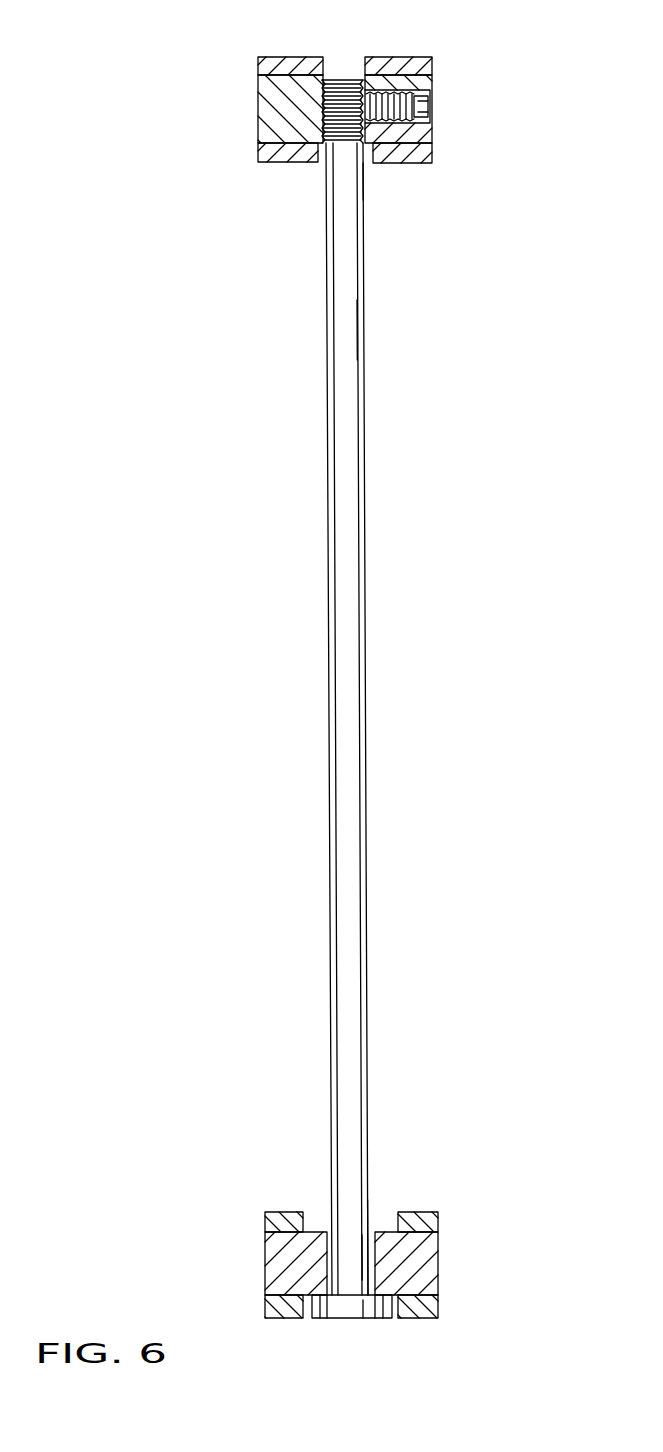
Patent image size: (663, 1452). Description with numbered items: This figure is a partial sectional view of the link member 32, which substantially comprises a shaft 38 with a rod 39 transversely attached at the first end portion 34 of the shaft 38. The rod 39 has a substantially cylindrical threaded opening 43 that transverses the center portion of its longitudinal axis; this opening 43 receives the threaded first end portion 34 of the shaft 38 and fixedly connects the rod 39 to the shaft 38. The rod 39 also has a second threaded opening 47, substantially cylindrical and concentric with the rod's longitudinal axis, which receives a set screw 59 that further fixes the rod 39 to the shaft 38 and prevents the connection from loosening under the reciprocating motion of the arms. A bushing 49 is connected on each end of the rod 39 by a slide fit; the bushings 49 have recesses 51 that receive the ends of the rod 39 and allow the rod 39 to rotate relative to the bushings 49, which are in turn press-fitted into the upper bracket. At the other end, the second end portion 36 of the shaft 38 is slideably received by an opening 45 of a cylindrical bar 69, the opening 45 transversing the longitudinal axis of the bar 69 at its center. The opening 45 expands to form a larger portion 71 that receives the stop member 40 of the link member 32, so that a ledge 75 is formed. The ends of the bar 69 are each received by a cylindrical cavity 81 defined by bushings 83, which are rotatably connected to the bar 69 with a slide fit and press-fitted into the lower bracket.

The link member 32 is at (365, 450).
The first end portion 34 is at (363, 192).
The second end portion 36 is at (370, 1200).
The shaft 38 is at (363, 333).
The rod 39 is at (258, 125).
The stop member 40 is at (362, 1320).
The threaded opening 43 is at (337, 80).
The opening 45 is at (378, 1258).
The second threaded opening 47 is at (432, 108).
The bushing 49 is at (275, 163).
The recess 51 is at (258, 85).
The set screw 59 is at (432, 118).
The cylindrical bar 69 is at (438, 1248).
The larger portion 71 is at (390, 1297).
The ledge 75 is at (313, 1297).
The cylindrical cavity 81 is at (282, 1297).
The bushing 83 is at (263, 1225).